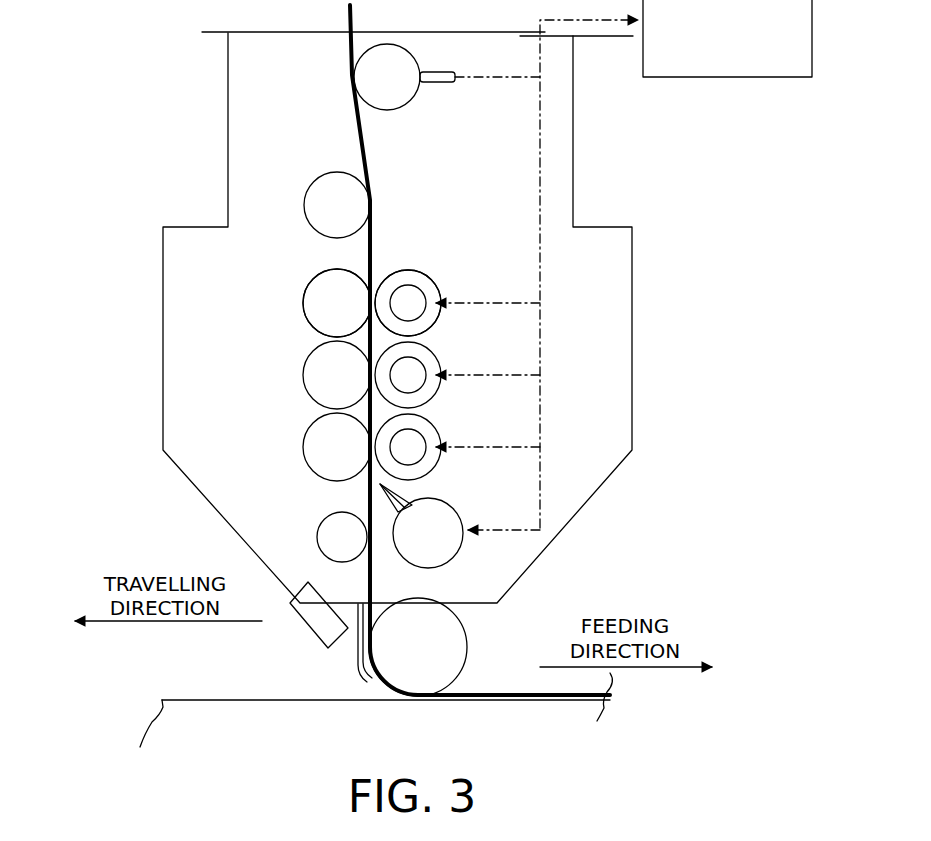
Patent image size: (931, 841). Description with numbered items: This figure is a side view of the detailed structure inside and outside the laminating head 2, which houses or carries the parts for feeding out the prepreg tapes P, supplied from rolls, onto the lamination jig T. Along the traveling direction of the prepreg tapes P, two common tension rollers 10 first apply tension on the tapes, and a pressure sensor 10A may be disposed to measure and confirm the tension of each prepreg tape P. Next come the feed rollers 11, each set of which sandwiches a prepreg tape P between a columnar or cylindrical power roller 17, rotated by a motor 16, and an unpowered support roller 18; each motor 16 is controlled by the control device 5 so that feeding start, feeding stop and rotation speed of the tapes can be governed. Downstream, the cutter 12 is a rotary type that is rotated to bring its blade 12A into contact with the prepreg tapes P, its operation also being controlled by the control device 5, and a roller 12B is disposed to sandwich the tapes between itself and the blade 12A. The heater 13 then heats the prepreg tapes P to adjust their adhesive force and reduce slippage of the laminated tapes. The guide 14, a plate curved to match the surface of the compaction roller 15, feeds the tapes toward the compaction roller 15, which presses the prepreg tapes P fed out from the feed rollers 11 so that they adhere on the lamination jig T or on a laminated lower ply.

The laminating head 2 is at (138, 270).
The control device 5 is at (730, 78).
The prepreg tape P is at (348, 47).
The tension roller 10 is at (372, 81).
The pressure sensor 10A is at (437, 85).
The feed rollers 11 is at (298, 305).
The support roller 18 is at (318, 293).
The motor 16 is at (409, 283).
The power roller 17 is at (440, 280).
The blade 12A is at (413, 488).
The cutter 12 is at (470, 548).
The roller 12B is at (320, 538).
The heater 13 is at (322, 617).
The guide 14 is at (357, 665).
The compaction roller 15 is at (450, 648).
The lamination jig T is at (210, 698).